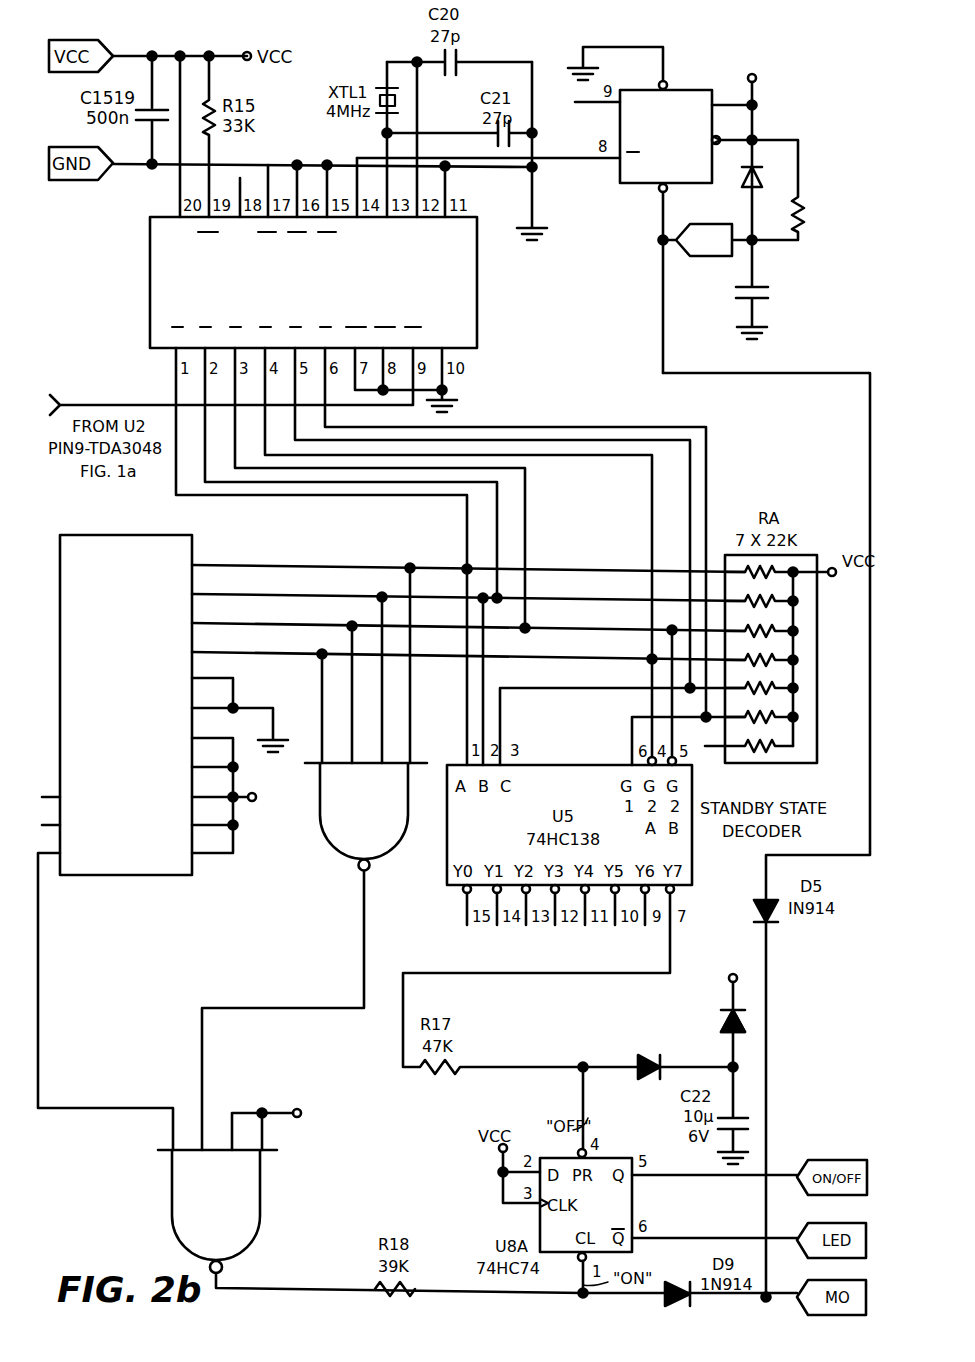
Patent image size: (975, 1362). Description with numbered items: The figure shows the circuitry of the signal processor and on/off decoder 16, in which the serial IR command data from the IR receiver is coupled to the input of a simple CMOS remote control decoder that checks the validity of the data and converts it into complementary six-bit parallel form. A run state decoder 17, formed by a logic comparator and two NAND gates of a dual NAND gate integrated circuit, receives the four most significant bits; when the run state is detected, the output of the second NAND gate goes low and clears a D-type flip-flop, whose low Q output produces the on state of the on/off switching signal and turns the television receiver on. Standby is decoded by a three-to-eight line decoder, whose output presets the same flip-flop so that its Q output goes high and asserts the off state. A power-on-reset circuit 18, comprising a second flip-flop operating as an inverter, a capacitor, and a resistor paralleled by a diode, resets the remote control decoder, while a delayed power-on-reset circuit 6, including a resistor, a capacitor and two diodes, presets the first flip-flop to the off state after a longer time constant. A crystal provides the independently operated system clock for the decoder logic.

The on/off decoder 16 is at (124, 280).
The run state decoder 17 is at (310, 914).
The power-on-reset circuit 18 is at (700, 195).
The delayed power-on-reset circuit 6 is at (692, 1041).